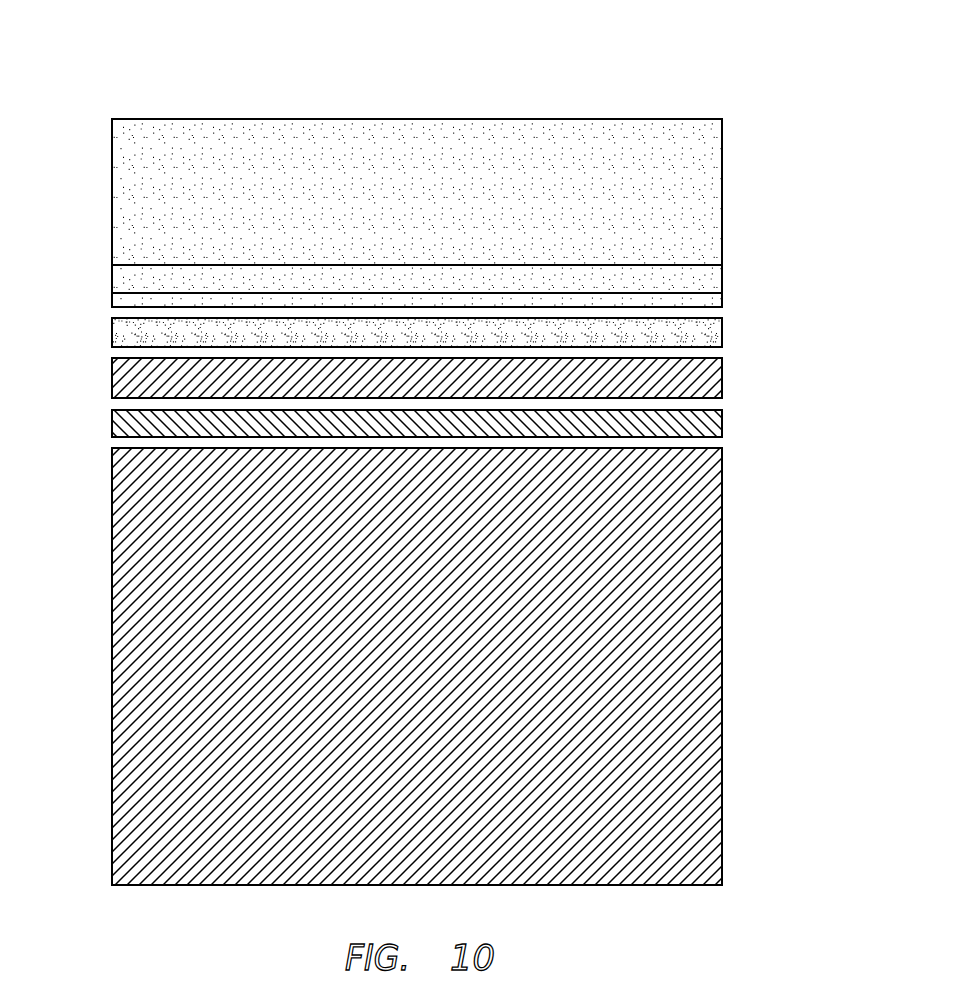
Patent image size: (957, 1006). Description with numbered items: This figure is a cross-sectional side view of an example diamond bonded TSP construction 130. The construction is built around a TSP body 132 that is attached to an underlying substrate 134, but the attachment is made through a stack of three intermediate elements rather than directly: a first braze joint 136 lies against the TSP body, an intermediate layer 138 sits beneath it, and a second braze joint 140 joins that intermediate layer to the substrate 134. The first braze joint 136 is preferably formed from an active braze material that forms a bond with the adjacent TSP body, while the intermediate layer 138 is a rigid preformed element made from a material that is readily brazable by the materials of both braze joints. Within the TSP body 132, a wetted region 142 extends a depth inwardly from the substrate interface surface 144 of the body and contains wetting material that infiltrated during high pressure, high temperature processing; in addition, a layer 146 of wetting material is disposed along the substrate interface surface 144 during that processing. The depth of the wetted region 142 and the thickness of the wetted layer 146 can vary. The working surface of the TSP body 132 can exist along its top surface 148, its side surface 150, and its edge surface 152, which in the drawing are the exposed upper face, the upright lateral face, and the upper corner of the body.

The TSP construction 130 is at (486, 83).
The TSP body 132 is at (138, 194).
The substrate 134 is at (130, 573).
The first braze joint 136 is at (120, 333).
The intermediate layer 138 is at (120, 373).
The second braze joint 140 is at (120, 422).
The wetted region 142 is at (120, 277).
The substrate interface surface 144 is at (140, 297).
The layer of wetting material 146 is at (717, 298).
The top surface 148 is at (290, 119).
The side surface 150 is at (722, 183).
The edge surface 152 is at (112, 119).